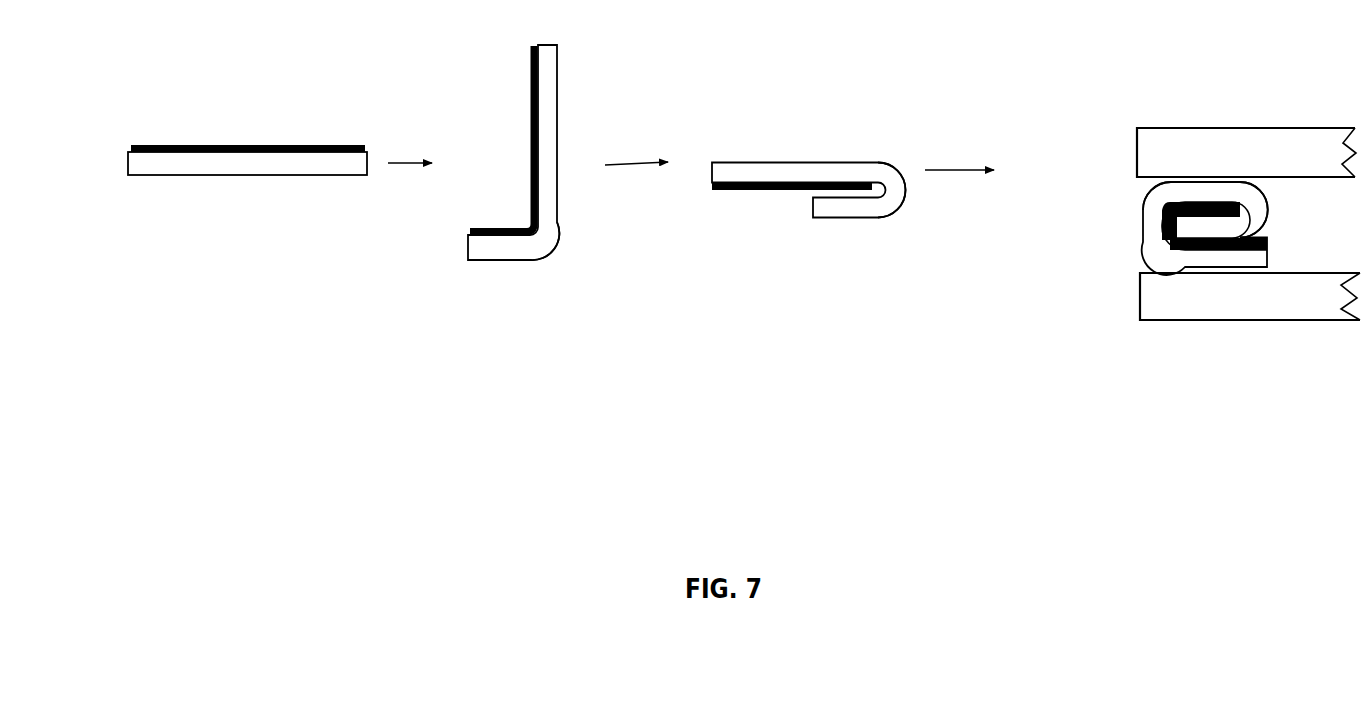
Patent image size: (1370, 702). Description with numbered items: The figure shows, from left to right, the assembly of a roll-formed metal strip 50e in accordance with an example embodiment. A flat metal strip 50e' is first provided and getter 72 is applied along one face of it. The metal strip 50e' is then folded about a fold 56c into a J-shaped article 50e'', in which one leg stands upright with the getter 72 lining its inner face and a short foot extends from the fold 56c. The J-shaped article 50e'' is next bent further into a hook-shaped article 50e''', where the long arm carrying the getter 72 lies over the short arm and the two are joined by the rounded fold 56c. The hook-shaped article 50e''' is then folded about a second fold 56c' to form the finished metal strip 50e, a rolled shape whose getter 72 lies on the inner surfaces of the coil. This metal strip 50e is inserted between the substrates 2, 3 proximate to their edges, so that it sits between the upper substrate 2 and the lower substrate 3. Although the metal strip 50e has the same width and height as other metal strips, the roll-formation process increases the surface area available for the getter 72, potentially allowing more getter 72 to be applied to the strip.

The substrate 2 is at (1222, 124).
The substrate 3 is at (1240, 326).
The metal strip 50e is at (1162, 229).
The metal strip 50e' is at (223, 191).
The J-shaped article 50e'' is at (526, 182).
The hook-shaped article 50e''' is at (808, 151).
The fold 56c is at (941, 181).
The second fold 56c' is at (1122, 184).
The getter 72 is at (190, 142).